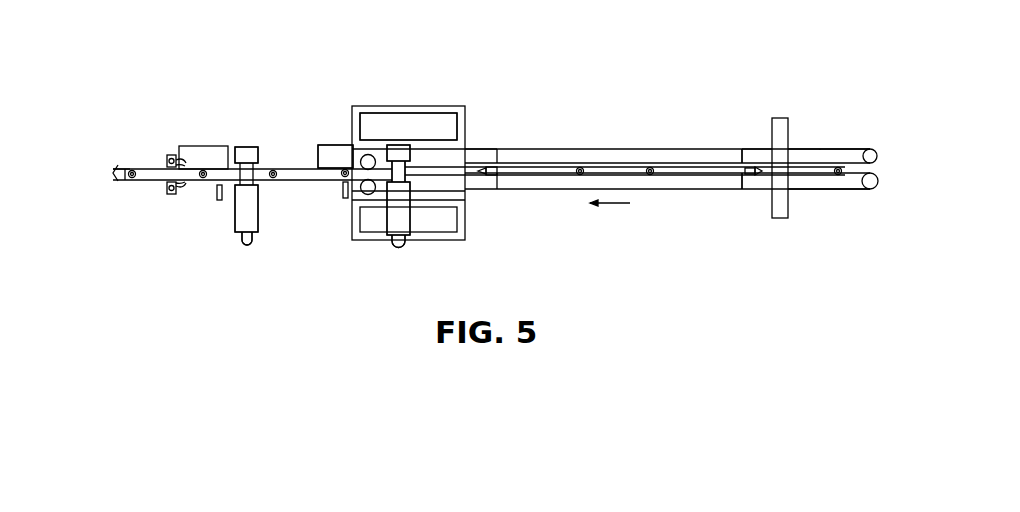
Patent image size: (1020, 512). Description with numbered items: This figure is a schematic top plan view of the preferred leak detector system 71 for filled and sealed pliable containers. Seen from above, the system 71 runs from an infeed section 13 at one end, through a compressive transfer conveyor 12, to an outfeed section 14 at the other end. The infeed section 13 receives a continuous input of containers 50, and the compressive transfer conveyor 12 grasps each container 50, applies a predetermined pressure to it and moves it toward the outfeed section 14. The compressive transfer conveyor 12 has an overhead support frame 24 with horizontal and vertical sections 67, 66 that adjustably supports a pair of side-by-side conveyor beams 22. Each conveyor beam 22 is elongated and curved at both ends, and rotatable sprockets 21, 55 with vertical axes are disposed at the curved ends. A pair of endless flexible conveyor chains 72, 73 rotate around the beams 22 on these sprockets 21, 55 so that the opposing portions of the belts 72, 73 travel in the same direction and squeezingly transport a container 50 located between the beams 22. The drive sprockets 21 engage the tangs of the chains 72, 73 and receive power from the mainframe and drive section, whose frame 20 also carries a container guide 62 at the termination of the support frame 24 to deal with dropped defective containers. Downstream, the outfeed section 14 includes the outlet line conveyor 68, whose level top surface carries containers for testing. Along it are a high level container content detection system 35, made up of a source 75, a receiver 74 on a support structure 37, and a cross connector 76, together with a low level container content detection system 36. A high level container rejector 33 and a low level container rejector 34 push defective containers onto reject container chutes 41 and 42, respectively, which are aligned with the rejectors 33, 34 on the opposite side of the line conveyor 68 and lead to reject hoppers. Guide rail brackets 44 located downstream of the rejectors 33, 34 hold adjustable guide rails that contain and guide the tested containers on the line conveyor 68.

The compressive transfer conveyor 12 is at (697, 78).
The infeed section 13 is at (895, 112).
The outfeed section 14 is at (77, 108).
The frame 20 is at (433, 106).
The drive sprocket 21 is at (362, 158).
The conveyor beams 22 is at (593, 151).
The support frame 24 is at (470, 167).
The high level container rejector 33 is at (338, 207).
The low level container rejector 34 is at (212, 210).
The high level container content detection system 35 is at (425, 250).
The low level container content detection system 36 is at (275, 257).
The support structure 37 is at (248, 246).
The reject container chute 41 is at (324, 145).
The reject container chute 42 is at (213, 147).
The guide rail brackets 44 is at (170, 156).
The container 50 is at (650, 166).
The sprocket 55 is at (878, 178).
The container guide 62 is at (430, 170).
The vertical section 66 is at (740, 140).
The horizontal section 67 is at (682, 140).
The line conveyor 68 is at (113, 173).
The leak detector system 71 is at (268, 82).
The flexible conveyor chain 72 is at (826, 185).
The flexible conveyor chain 73 is at (832, 149).
The receiver 74 is at (240, 224).
The source 75 is at (248, 148).
The cross connector 76 is at (414, 160).